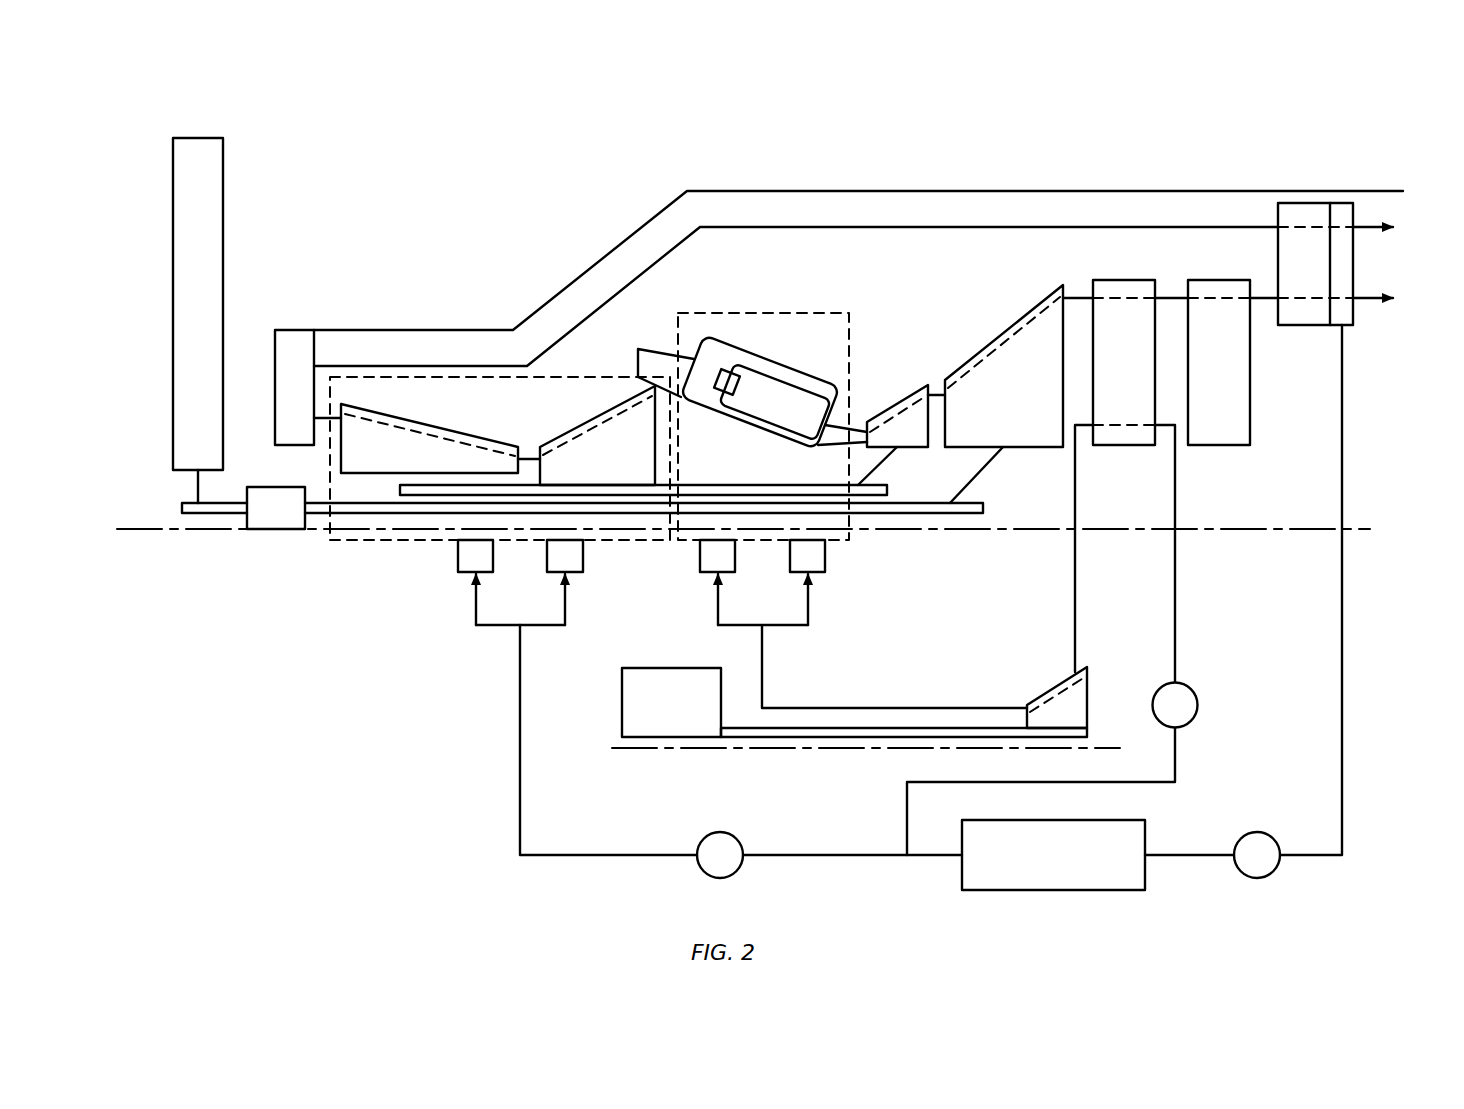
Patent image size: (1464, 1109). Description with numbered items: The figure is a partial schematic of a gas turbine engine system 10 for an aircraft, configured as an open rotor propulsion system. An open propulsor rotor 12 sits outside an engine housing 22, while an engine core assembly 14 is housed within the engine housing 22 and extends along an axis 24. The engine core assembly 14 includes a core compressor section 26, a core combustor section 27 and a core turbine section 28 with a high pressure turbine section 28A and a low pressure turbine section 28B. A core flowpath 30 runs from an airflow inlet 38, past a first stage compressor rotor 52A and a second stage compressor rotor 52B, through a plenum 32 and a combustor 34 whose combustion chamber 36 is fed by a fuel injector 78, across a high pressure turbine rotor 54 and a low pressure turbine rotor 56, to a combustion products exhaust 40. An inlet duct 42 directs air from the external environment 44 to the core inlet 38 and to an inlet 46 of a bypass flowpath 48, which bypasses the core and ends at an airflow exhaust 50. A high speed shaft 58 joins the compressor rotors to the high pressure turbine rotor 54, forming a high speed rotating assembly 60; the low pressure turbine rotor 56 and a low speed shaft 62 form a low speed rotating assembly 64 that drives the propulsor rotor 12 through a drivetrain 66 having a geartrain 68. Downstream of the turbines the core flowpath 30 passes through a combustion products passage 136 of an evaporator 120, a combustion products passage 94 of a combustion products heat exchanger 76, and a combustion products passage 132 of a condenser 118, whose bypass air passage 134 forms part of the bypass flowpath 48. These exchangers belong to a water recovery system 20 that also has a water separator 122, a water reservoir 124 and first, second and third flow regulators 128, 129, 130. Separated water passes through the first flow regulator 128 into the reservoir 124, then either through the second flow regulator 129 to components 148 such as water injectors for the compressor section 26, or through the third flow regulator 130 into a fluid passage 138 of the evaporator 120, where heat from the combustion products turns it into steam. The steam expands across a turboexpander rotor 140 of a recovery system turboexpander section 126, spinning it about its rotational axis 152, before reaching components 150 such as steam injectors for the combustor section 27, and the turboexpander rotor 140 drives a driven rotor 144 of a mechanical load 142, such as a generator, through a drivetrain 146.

The gas turbine engine system 10 is at (148, 115).
The open propulsor rotor 12 is at (172, 350).
The engine core assembly 14 is at (313, 607).
The water recovery system 20 is at (475, 843).
The engine housing 22 is at (893, 190).
The axis 24 is at (133, 532).
The core compressor section 26 is at (510, 366).
The core combustor section 27 is at (765, 310).
The core turbine section 28 is at (947, 330).
The high pressure turbine section 28A is at (895, 390).
The low pressure turbine section 28B is at (987, 320).
The core flowpath 30 is at (637, 363).
The plenum 32 is at (705, 358).
The combustor 34 is at (795, 378).
The combustion chamber 36 is at (768, 414).
The airflow inlet 38 is at (313, 418).
The combustion products exhaust 40 is at (1405, 298).
The inlet duct 42 is at (283, 402).
The external environment 44 is at (90, 259).
The bypass inlet 46 is at (313, 365).
The bypass flowpath 48 is at (812, 226).
The airflow exhaust 50 is at (1405, 227).
The first stage compressor rotor 52A is at (368, 473).
The second stage compressor rotor 52B is at (615, 488).
The high pressure turbine rotor 54 is at (860, 443).
The low pressure turbine rotor 56 is at (1023, 447).
The high speed shaft 58 is at (700, 486).
The high speed rotating assembly 60 is at (447, 413).
The low speed shaft 62 is at (337, 532).
The low speed rotating assembly 64 is at (990, 512).
The drivetrain 66 is at (235, 543).
The geartrain 68 is at (264, 519).
The combustion products heat exchanger 76 is at (1250, 385).
The fuel injector 78 is at (713, 377).
The combustion products passage 94 is at (1203, 297).
The condensing heat exchanger 118 is at (1308, 224).
The evaporating heat exchanger 120 is at (1127, 297).
The water separator 122 is at (1353, 255).
The water reservoir 124 is at (1127, 869).
The recovery system turboexpander section 126 is at (1100, 665).
The first flow regulator 128 is at (1258, 878).
The second flow regulator 129 is at (722, 878).
The third flow regulator 130 is at (1198, 705).
The combustion products passage 132 is at (1310, 298).
The bypass air passage 134 is at (1308, 224).
The combustion products passage 136 is at (1125, 297).
The fluid passage 138 is at (1125, 425).
The recovery system turboexpander rotor 140 is at (1095, 700).
The mechanical load 142 is at (602, 705).
The driven rotor 144 is at (648, 714).
The drivetrain 146 is at (840, 737).
The turbine engine components 148 is at (493, 555).
The turbine engine components 150 is at (735, 555).
The rotational axis 152 is at (620, 750).